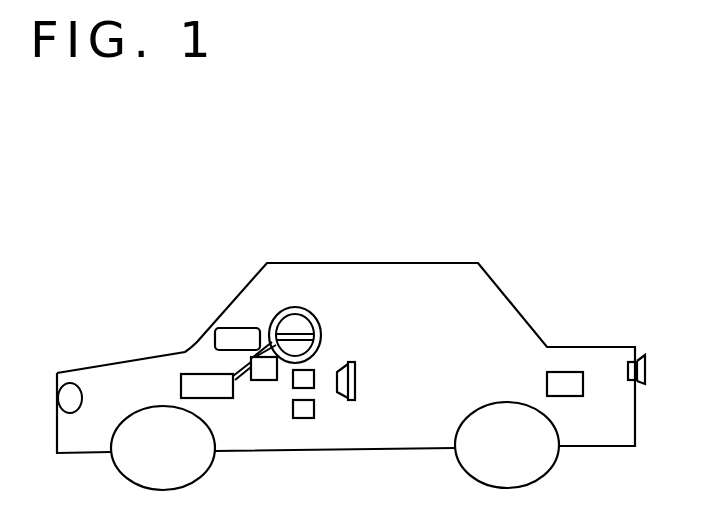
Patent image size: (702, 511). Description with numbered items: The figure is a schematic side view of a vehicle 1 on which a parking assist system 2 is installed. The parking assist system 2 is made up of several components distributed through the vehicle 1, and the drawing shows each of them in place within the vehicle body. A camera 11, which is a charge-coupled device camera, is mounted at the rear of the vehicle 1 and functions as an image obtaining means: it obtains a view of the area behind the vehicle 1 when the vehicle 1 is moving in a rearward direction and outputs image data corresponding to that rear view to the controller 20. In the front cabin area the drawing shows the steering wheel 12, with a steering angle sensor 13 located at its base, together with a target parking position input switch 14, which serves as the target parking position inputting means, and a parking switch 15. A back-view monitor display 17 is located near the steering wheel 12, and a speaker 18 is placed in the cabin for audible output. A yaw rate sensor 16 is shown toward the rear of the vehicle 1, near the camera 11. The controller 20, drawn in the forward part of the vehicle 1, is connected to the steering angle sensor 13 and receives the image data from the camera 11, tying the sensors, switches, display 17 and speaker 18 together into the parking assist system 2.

The vehicle 1 is at (528, 313).
The parking assist system 2 is at (374, 326).
The camera 11 is at (647, 372).
The steering wheel 12 is at (308, 303).
The steering angle sensor 13 is at (265, 380).
The target parking position input switch 14 is at (314, 408).
The parking switch 15 is at (314, 372).
The yaw rate sensor 16 is at (572, 396).
The back-view monitor display 17 is at (247, 328).
The speaker 18 is at (355, 382).
The controller 20 is at (228, 398).